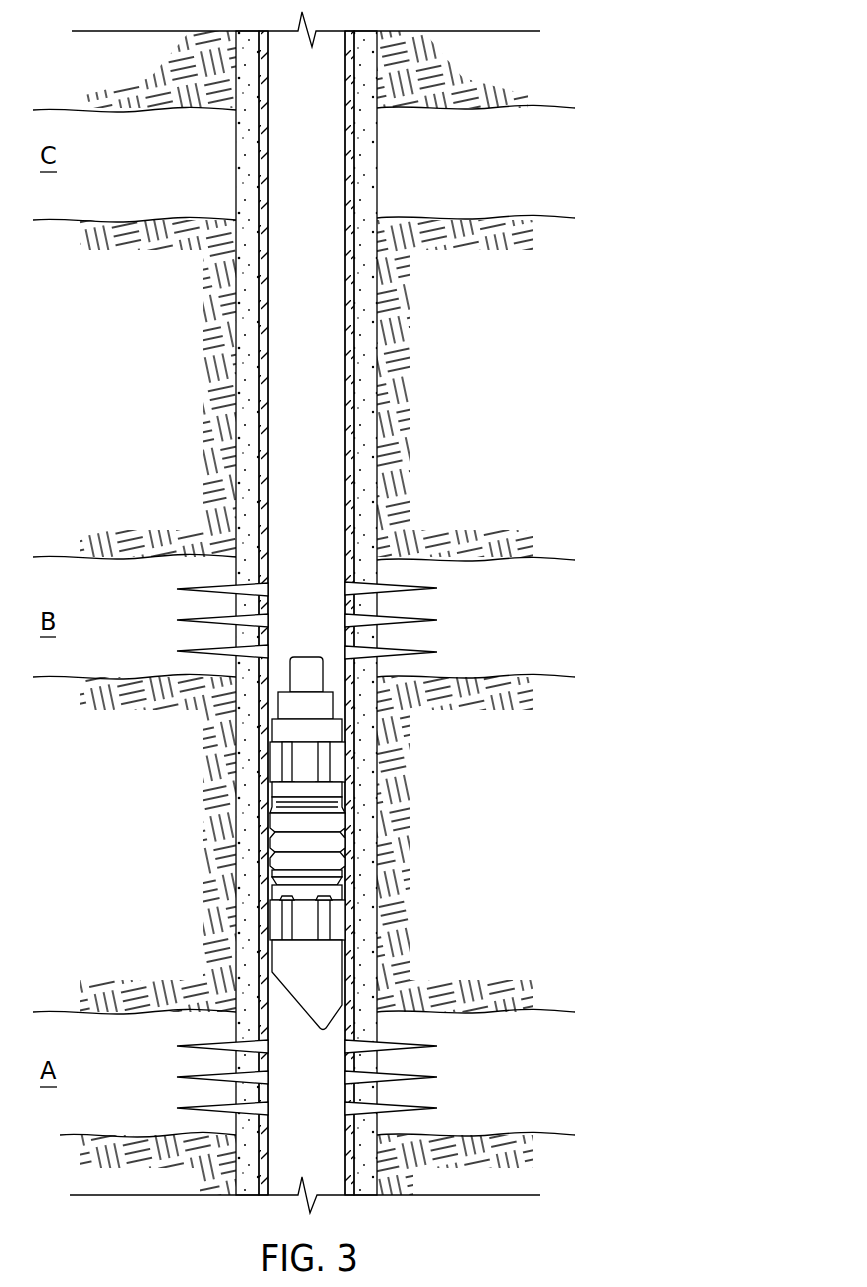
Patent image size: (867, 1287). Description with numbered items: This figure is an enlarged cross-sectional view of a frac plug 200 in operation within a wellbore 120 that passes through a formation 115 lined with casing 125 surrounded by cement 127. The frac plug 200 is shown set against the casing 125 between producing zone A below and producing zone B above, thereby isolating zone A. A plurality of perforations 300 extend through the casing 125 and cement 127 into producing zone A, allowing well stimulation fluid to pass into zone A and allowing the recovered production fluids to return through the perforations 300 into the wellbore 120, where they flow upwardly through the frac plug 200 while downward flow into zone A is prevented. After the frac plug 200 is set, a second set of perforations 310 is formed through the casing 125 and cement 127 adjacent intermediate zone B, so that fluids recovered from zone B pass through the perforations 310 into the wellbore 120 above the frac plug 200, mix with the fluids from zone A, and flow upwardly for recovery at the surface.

The formation 115 is at (463, 248).
The wellbore 120 is at (322, 163).
The casing 125 is at (350, 438).
The cement 127 is at (367, 330).
The frac plug 200 is at (317, 844).
The perforations 310 is at (177, 589).
The perforations 300 is at (177, 1046).